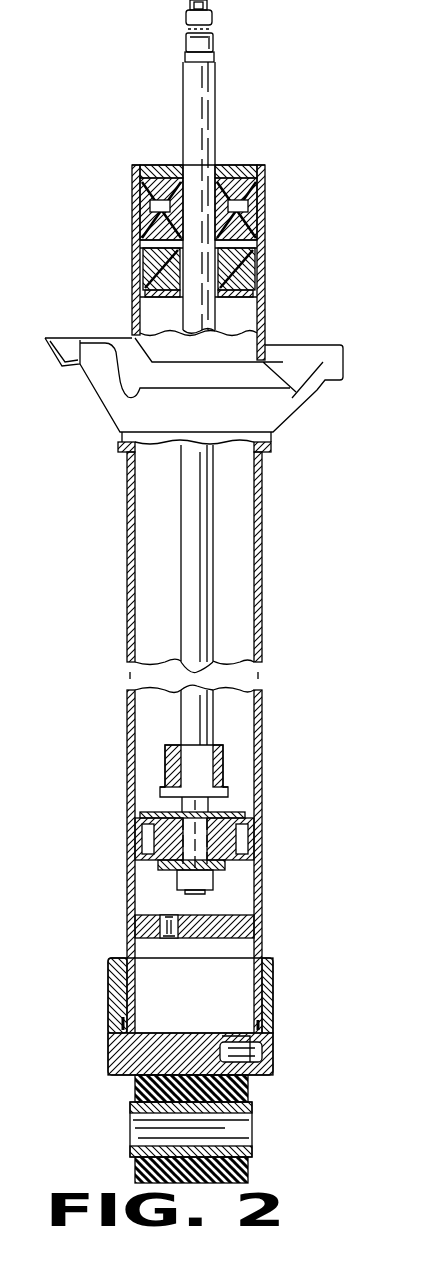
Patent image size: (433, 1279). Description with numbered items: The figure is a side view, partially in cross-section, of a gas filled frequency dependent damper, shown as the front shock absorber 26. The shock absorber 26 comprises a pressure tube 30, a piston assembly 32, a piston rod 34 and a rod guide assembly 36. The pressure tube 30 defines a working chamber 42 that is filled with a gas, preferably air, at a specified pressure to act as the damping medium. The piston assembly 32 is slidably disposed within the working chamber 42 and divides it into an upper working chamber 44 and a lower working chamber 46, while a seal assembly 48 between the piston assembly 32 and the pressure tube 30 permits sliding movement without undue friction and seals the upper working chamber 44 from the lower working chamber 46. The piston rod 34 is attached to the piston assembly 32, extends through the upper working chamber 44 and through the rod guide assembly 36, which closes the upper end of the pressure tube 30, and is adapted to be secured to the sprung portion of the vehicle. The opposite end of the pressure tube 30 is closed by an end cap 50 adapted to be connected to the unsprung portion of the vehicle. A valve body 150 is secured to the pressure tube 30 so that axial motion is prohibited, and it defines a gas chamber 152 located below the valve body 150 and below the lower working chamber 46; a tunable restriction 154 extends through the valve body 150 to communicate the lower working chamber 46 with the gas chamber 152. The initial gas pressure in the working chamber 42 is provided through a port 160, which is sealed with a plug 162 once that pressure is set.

The front shock absorber 26 is at (298, 84).
The piston rod 34 is at (188, 113).
The rod guide assembly 36 is at (248, 200).
The pressure tube 30 is at (262, 520).
The working chamber 42 is at (158, 552).
The upper working chamber 44 is at (150, 596).
The seal assembly 48 is at (135, 832).
The piston assembly 32 is at (262, 838).
The lower working chamber 46 is at (143, 882).
The tunable restriction 154 is at (160, 925).
The valve body 150 is at (262, 928).
The gas chamber 152 is at (214, 998).
The end cap 50 is at (273, 1000).
The plug 162 is at (262, 1050).
The port 160 is at (258, 1072).